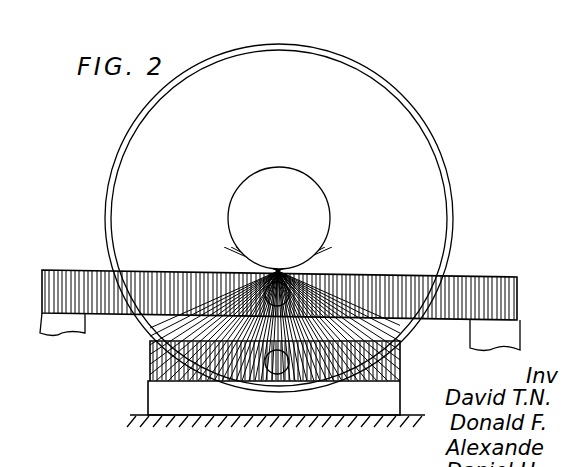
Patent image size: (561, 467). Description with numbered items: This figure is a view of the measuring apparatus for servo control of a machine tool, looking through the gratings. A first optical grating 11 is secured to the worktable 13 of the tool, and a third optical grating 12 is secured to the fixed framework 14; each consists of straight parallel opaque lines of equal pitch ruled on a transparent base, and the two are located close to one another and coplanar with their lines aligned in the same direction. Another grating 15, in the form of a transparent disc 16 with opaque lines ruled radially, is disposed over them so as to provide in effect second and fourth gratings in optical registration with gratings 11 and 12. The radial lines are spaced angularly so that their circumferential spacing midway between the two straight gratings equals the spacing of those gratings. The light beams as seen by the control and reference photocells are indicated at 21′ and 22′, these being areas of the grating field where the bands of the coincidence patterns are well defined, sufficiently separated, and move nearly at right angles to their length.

The first optical grating 11 is at (60, 279).
The third optical grating 12 is at (400, 363).
The worktable 13 is at (49, 328).
The fixed framework 14 is at (146, 413).
The grating 15 is at (330, 259).
The transparent disc 16 is at (443, 155).
The light beam 21′ is at (278, 283).
The light beam 22′ is at (277, 375).